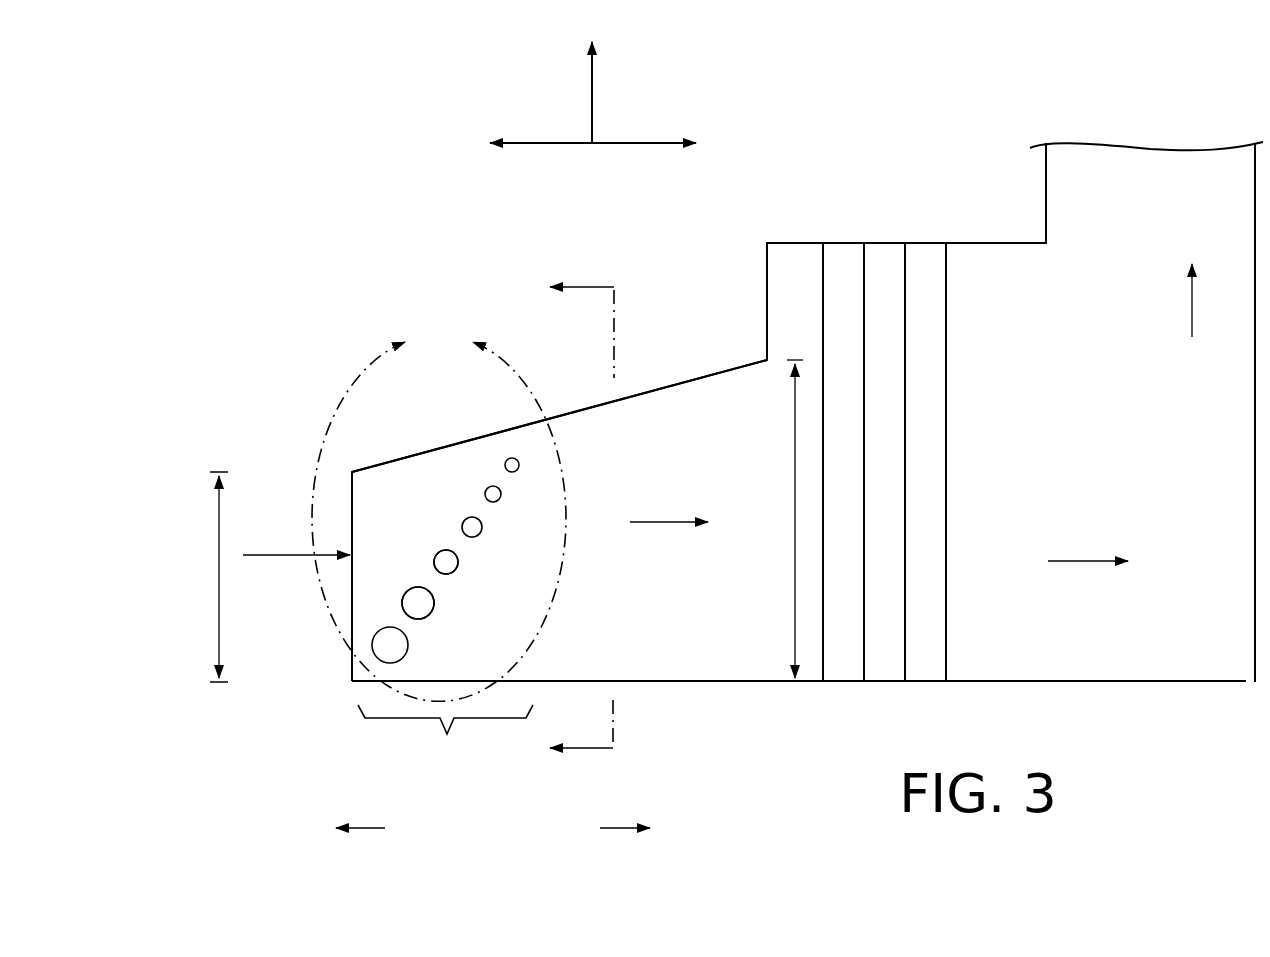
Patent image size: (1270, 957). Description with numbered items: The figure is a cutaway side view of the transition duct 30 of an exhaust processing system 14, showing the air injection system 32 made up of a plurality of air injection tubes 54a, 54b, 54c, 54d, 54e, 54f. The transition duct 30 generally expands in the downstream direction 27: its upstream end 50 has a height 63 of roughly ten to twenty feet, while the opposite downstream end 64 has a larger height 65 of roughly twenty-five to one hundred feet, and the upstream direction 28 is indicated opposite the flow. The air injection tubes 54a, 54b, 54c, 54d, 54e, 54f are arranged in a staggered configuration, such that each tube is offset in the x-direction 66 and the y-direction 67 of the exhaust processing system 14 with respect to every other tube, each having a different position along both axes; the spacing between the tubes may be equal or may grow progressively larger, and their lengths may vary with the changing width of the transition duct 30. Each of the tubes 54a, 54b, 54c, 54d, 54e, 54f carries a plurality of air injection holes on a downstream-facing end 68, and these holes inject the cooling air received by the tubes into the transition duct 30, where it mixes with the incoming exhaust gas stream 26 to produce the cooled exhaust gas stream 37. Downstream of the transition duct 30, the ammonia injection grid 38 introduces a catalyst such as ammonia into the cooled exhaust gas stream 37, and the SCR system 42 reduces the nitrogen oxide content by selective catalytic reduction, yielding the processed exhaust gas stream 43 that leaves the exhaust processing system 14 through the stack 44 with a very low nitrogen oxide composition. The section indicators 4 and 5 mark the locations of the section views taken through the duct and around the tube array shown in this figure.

The exhaust processing system 14 is at (875, 90).
The stack 44 is at (1115, 103).
The ammonia injection grid 38 is at (846, 257).
The SCR system 42 is at (930, 257).
The transition duct 30 is at (712, 372).
The downstream end 64 is at (765, 380).
The upstream end 50 is at (348, 670).
The section view 5 is at (439, 505).
The section view 4 is at (579, 519).
The air injection tube 54a is at (510, 460).
The air injection tube 54b is at (491, 492).
The air injection tube 54c is at (474, 534).
The air injection tube 54d is at (443, 556).
The air injection tube 54e is at (420, 608).
The air injection tube 54f is at (392, 648).
The downstream-facing end 68 is at (436, 598).
The air injection system 32 is at (445, 736).
The height 63 is at (219, 576).
The height 65 is at (795, 524).
The exhaust gas stream 26 is at (280, 557).
The cooled exhaust gas stream 37 is at (663, 524).
The processed exhaust gas stream 43 is at (1192, 300).
The upstream direction 28 is at (367, 830).
The downstream direction 27 is at (613, 830).
The x-direction 66 is at (550, 145).
The y-direction 67 is at (592, 88).